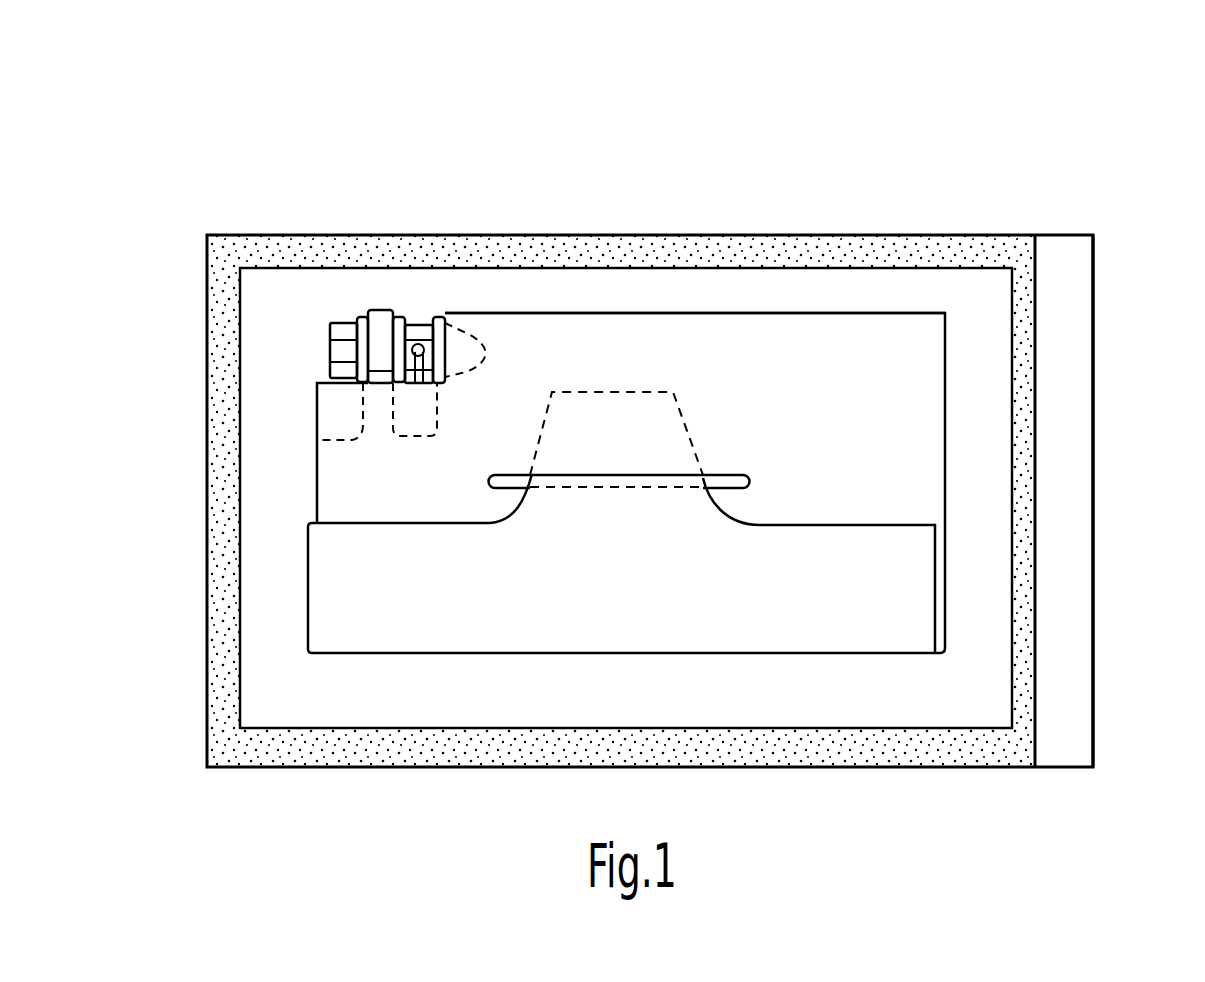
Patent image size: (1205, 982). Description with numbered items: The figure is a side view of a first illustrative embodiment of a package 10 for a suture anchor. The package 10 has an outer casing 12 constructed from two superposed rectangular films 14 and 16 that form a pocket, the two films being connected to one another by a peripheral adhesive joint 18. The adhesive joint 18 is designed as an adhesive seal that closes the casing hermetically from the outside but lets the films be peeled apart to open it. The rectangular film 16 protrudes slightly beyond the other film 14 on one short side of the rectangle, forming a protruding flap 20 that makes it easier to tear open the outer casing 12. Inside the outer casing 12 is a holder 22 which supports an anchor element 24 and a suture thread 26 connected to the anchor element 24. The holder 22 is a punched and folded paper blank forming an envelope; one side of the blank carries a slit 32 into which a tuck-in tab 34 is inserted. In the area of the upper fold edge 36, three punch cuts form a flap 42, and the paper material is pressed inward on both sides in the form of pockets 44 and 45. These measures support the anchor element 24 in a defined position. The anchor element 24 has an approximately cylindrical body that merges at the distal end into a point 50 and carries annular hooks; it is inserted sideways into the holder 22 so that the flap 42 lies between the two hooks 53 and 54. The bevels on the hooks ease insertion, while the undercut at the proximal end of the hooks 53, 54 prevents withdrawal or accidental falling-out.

The package 10 is at (717, 132).
The outer casing 12 is at (253, 373).
The rectangular film 14 is at (975, 238).
The rectangular film 16 is at (1063, 250).
The peripheral adhesive joint 18 is at (827, 747).
The protruding flap 20 is at (413, 262).
The holder 22 is at (788, 285).
The anchor element 24 is at (343, 332).
The suture thread 26 is at (447, 373).
The slit 32 is at (738, 477).
The tuck-in tab 34 is at (681, 425).
The upper fold edge 36 is at (595, 312).
The flap 42 is at (383, 312).
The pocket 44 is at (343, 440).
The pocket 45 is at (415, 440).
The point 50 is at (488, 337).
The hook 53 is at (408, 322).
The hook 54 is at (358, 323).